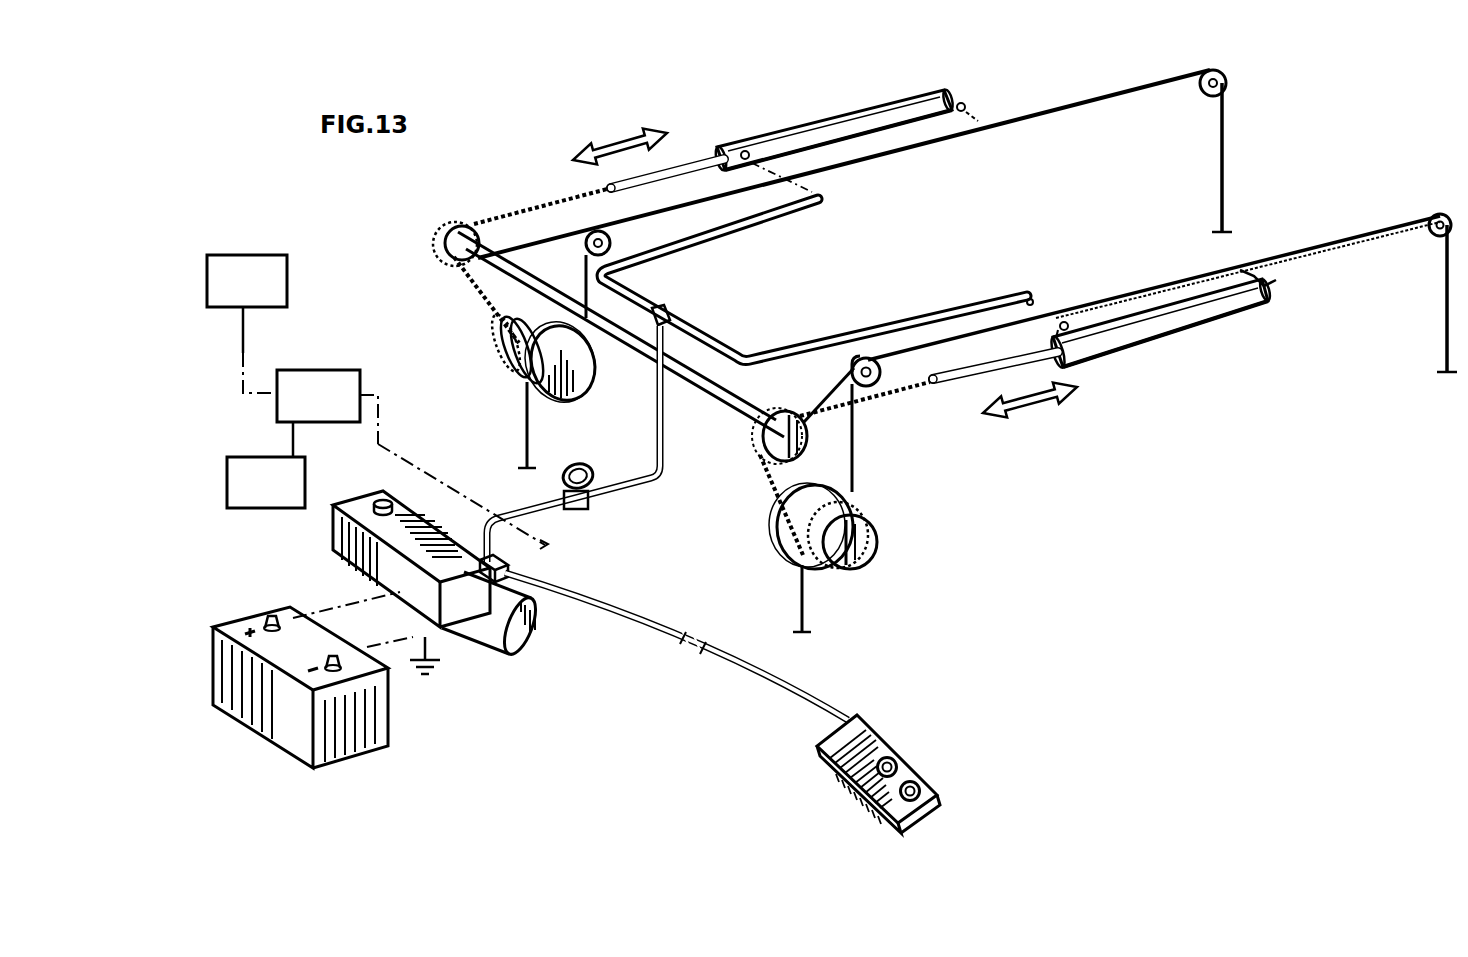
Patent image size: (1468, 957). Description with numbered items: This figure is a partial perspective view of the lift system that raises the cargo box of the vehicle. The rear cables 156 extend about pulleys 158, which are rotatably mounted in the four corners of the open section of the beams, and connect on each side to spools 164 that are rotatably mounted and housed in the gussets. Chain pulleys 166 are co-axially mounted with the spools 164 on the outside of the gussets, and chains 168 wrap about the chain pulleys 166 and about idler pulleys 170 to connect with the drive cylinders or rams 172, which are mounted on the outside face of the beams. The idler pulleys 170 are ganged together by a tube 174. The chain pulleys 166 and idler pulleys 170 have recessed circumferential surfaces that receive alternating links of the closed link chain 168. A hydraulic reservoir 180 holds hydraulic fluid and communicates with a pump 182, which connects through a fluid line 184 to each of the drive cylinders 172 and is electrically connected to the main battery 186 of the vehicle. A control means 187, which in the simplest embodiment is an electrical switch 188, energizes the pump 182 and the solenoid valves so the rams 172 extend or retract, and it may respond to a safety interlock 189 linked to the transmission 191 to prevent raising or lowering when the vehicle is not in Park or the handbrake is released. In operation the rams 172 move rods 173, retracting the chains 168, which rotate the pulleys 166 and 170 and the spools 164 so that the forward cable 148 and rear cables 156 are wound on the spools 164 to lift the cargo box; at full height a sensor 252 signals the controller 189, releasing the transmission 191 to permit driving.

The forward cable 148 is at (525, 422).
The rear cables 156 is at (1224, 178).
The pulleys 158 is at (585, 245).
The spools 164 is at (578, 385).
The chain pulleys 166 is at (496, 343).
The chains 168 is at (460, 300).
The idler pulleys 170 is at (468, 228).
The drive cylinders 172 is at (895, 108).
The rods 173 is at (714, 162).
The tube 174 is at (700, 372).
The hydraulic reservoir 180 is at (348, 502).
The pump 182 is at (535, 655).
The fluid line 184 is at (648, 494).
The main battery 186 is at (386, 738).
The control means 187 is at (512, 568).
The electrical switch 188 is at (912, 755).
The safety interlock 189 is at (340, 378).
The transmission 191 is at (220, 300).
The sensor 252 is at (226, 478).